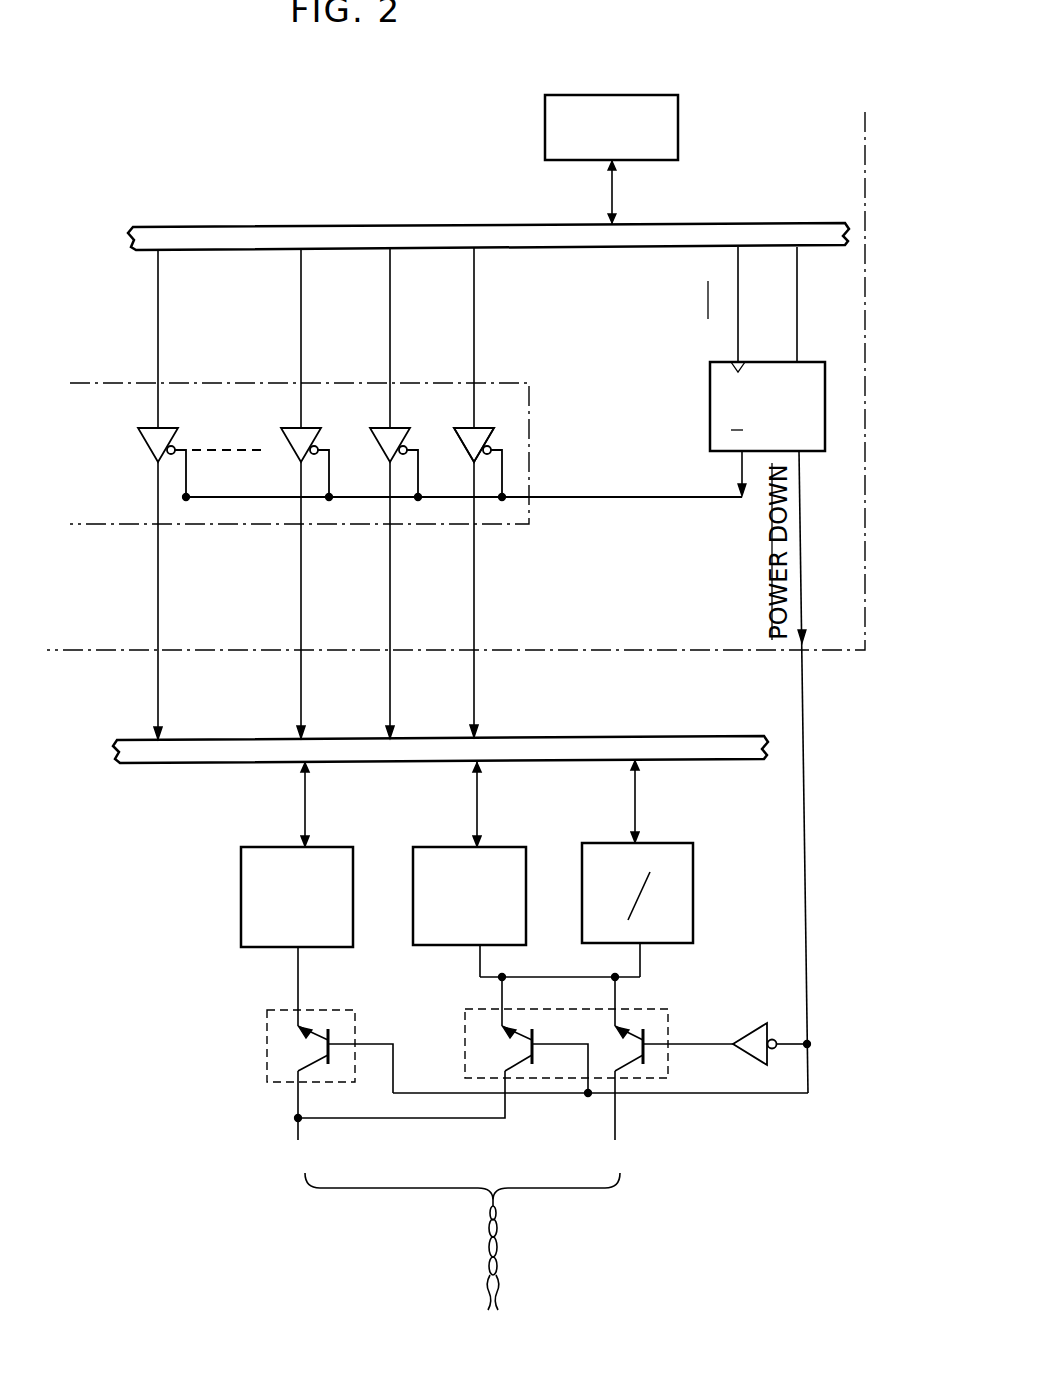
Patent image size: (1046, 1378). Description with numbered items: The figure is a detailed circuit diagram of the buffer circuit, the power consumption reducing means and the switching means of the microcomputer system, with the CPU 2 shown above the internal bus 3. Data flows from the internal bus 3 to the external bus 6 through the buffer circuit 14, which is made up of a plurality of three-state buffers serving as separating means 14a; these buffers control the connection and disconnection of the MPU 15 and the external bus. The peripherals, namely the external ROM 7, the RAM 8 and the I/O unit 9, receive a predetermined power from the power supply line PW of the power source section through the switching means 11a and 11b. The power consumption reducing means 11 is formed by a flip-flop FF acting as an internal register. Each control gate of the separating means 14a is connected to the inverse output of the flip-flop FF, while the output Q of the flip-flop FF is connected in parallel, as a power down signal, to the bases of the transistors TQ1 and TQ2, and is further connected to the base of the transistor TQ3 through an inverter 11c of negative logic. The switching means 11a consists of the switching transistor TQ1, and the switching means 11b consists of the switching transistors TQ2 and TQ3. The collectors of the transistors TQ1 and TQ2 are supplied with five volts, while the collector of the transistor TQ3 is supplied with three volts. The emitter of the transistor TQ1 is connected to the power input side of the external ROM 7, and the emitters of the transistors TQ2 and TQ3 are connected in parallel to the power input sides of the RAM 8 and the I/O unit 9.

The CPU 2 is at (679, 118).
The internal bus 3 is at (478, 222).
The external bus 6 is at (572, 736).
The external ROM 7 is at (241, 925).
The RAM 8 is at (413, 928).
The I/O unit 9 is at (582, 931).
The power consumption reducing means 11 is at (600, 746).
The switching means 11a is at (340, 1013).
The switching means 11b is at (654, 1011).
The inverter 11c is at (756, 1022).
The buffer circuit 14 is at (541, 479).
The separating means 14a is at (478, 427).
The MPU 15 is at (868, 340).
The flip-flop FF is at (826, 420).
The switching transistor TQ1 is at (287, 1040).
The switching transistor TQ2 is at (505, 1048).
The switching transistor TQ3 is at (651, 1072).
The power supply line PW is at (498, 1243).